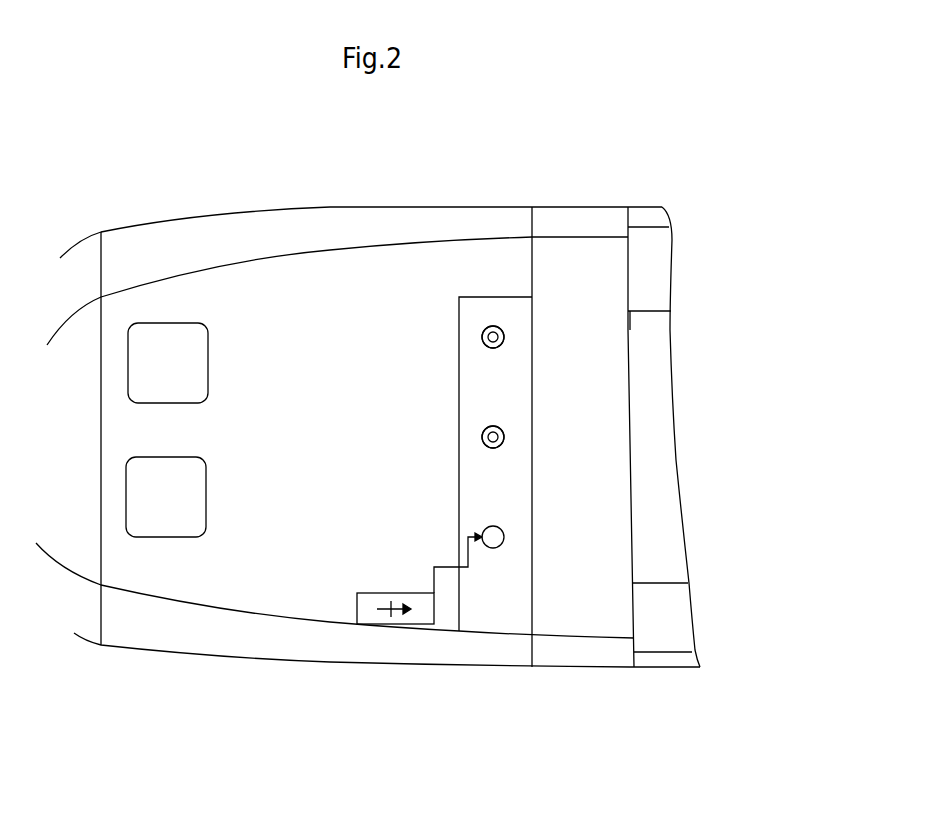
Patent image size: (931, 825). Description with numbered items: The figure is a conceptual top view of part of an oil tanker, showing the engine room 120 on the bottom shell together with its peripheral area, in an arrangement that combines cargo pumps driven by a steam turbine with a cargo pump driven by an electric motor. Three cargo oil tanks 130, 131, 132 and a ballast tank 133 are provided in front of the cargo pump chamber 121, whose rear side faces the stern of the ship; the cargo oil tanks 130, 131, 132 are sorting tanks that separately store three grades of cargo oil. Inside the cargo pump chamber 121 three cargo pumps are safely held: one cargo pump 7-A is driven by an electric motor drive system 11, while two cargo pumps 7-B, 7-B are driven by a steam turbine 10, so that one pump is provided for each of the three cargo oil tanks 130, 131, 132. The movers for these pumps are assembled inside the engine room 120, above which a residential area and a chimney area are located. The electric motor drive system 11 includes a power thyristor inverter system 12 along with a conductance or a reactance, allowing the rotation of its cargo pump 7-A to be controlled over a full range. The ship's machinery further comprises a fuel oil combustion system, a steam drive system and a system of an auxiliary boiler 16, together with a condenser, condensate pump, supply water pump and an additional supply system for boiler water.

The engine room 120 is at (365, 430).
The cargo pump chamber 121 is at (604, 462).
The cargo oil tank 130 is at (658, 269).
The cargo oil tank 131 is at (672, 616).
The cargo oil tank 132 is at (662, 464).
The ballast tank 133 is at (646, 217).
The auxiliary boiler 16 is at (168, 368).
The electric motor drive system 11 is at (382, 593).
The power thyristor inverter system 12 is at (393, 612).
The cargo pump 7-A is at (505, 537).
The cargo pump 7-B is at (505, 340).
The steam turbine 10 is at (543, 379).